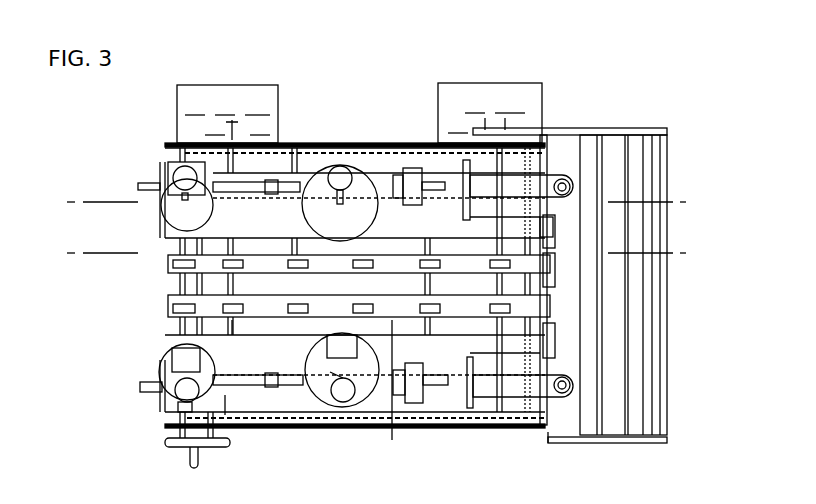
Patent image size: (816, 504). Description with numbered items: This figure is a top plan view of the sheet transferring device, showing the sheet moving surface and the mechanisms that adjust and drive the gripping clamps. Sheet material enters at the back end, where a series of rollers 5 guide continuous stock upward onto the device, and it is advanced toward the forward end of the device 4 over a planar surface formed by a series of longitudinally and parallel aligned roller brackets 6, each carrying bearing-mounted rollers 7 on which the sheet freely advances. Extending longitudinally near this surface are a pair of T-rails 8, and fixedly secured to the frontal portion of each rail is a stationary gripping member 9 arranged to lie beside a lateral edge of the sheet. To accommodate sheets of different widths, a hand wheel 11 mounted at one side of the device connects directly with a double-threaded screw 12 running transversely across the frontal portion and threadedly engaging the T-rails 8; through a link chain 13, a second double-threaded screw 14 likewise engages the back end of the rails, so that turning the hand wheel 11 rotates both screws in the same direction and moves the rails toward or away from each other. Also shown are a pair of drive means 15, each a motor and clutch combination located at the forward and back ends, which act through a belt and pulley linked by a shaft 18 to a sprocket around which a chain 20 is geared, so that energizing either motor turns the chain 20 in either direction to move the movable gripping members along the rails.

The forward end of the device 4 is at (117, 203).
The rollers 5 is at (592, 392).
The roller brackets 6 is at (340, 286).
The bearing-mounted rollers 7 is at (370, 298).
The T-rails 8 is at (518, 196).
The stationary gripping member 9 is at (150, 170).
The hand wheel 11 is at (178, 448).
The double-threaded screw 12 is at (178, 418).
The link chain 13 is at (303, 145).
The second double-threaded screw 14 is at (559, 280).
The drive means 15 is at (278, 85).
The shaft 18 is at (228, 287).
The chain 20 is at (438, 205).